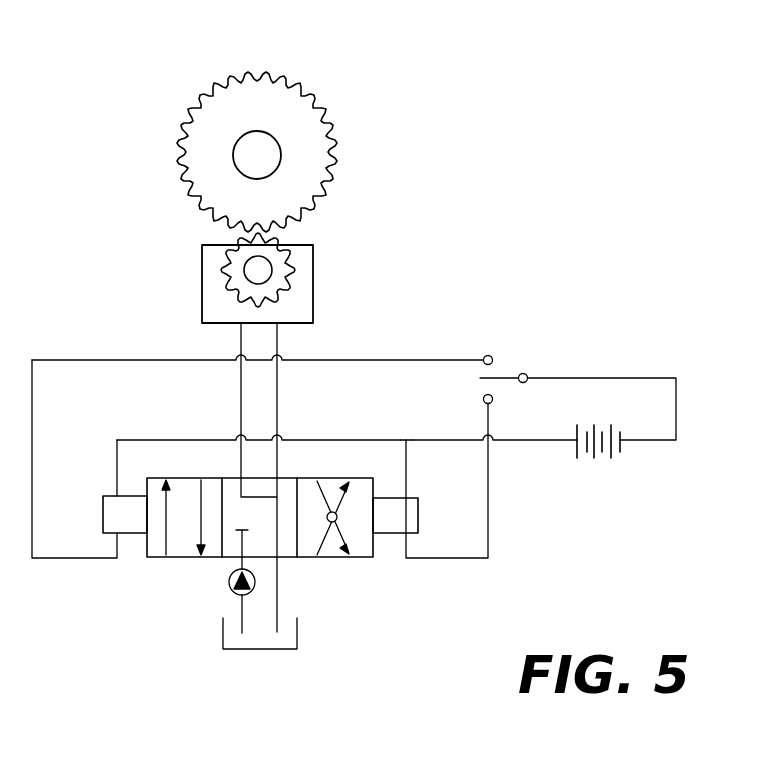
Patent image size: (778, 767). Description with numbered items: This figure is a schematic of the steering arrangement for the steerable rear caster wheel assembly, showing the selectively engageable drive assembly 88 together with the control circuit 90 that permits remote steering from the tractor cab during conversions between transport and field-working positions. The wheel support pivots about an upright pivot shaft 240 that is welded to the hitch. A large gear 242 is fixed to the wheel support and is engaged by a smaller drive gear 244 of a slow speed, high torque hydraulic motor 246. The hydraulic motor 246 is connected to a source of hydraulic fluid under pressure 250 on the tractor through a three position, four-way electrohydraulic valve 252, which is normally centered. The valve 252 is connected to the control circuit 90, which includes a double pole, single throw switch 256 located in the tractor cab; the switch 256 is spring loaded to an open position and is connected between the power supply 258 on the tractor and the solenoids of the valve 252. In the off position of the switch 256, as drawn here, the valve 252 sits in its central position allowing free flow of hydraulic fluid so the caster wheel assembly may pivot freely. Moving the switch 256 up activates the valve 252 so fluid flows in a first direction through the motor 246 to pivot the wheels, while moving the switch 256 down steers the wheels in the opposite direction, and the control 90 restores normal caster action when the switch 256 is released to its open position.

The drive assembly 88 is at (305, 129).
The control circuit 90 is at (354, 397).
The upright pivot shaft 240 is at (270, 146).
The large gear 242 is at (242, 78).
The drive gear 244 is at (296, 276).
The hydraulic motor 246 is at (313, 310).
The source of hydraulic fluid under pressure 250 is at (322, 613).
The electrohydraulic valve 252 is at (192, 477).
The switch 256 is at (524, 372).
The power supply 258 is at (577, 450).